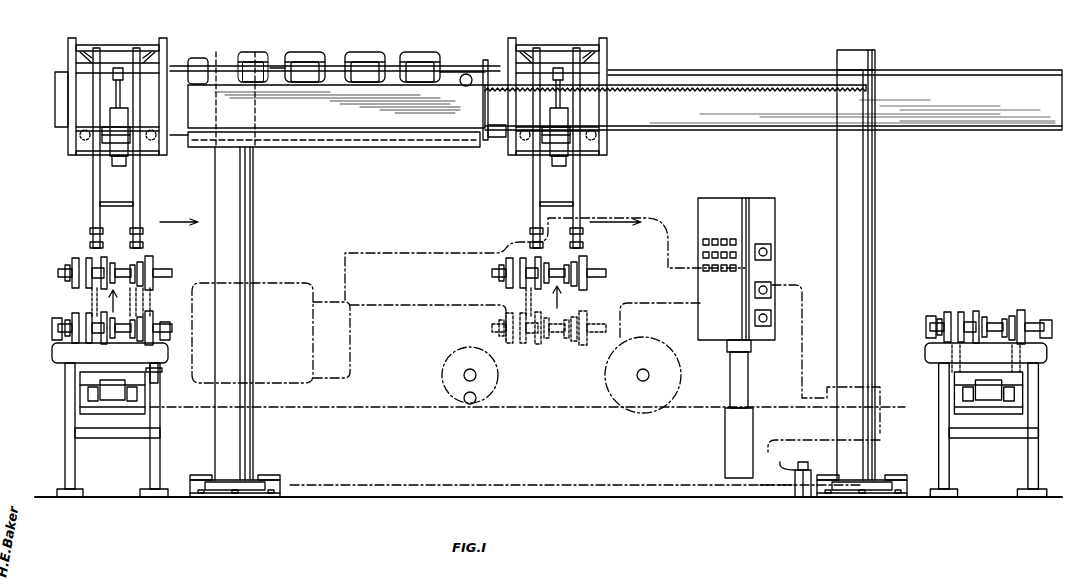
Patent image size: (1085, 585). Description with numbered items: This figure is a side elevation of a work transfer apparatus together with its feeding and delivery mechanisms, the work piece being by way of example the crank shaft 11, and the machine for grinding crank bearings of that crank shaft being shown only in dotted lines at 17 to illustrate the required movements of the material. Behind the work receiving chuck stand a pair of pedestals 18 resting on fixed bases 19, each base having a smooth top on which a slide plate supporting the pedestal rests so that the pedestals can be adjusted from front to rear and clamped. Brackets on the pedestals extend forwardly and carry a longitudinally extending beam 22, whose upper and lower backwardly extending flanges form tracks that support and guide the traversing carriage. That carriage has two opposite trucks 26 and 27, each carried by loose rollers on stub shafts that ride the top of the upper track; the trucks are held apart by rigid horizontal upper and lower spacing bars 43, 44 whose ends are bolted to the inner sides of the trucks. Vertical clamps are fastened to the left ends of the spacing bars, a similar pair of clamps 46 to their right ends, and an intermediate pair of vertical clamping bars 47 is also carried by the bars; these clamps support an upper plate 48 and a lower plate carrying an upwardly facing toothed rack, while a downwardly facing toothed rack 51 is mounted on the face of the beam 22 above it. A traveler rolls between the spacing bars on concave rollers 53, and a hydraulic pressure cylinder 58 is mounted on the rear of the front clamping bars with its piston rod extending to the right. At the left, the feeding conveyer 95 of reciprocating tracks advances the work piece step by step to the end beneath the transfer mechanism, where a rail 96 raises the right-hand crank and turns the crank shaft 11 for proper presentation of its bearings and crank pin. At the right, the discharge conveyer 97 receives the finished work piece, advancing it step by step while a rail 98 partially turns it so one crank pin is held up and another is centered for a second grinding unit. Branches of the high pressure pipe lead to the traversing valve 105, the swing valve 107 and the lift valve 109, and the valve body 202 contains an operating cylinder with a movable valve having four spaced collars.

The crank shaft 11 is at (60, 272).
The machine for grinding crank bearings 17 is at (399, 262).
The pedestal 18 is at (848, 177).
The fixed base 19 is at (262, 486).
The beam 22 is at (977, 80).
The truck 26 is at (85, 101).
The truck 27 is at (592, 104).
The upper spacing bar 43 is at (180, 62).
The lower spacing bar 44 is at (497, 138).
The vertical clamps 46 is at (489, 62).
The intermediate vertical clamping bars 47 is at (278, 70).
The upper plate 48 is at (335, 99).
The downwardly facing toothed rack 51 is at (670, 86).
The concave rollers 53 is at (464, 74).
The hydraulic pressure cylinder 58 is at (288, 132).
The feeding conveyer 95 is at (68, 387).
The rail 96 is at (160, 345).
The discharge conveyer 97 is at (948, 387).
The rail 98 is at (1036, 346).
The traversing valve 105 is at (310, 52).
The swing valve 107 is at (365, 52).
The lift valve 109 is at (418, 52).
The valve body 202 is at (253, 52).